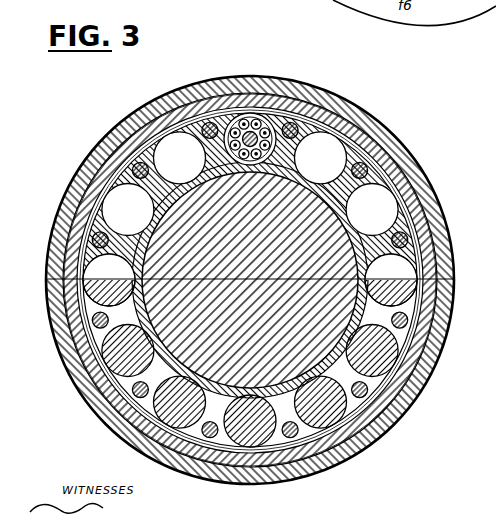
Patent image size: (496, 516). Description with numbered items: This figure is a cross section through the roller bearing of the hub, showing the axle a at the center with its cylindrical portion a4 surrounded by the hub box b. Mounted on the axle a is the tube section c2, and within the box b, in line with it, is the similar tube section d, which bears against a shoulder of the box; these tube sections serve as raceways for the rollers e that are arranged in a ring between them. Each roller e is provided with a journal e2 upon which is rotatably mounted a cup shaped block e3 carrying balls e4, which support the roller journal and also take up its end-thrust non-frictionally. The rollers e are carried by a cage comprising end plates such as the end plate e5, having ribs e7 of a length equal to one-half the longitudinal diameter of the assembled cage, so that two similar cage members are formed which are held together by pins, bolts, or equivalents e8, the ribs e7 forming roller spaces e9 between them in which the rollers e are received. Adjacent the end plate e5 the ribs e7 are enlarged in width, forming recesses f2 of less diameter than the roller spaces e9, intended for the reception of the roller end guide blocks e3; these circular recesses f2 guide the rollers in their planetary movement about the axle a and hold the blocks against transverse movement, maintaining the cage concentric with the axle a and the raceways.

The hub box b is at (127, 119).
The tube section d is at (395, 175).
The tube section c2 is at (433, 313).
The roller e is at (390, 373).
The roller space e9 is at (342, 190).
The cylindrical portion a4 is at (275, 372).
The axle a is at (248, 372).
The rib e7 is at (152, 147).
The recess f2 is at (250, 245).
The pin e8 is at (205, 135).
The ball e4 is at (272, 128).
The journal e2 is at (256, 130).
The cup shaped block e3 is at (247, 126).
The end plate e5 is at (486, 189).